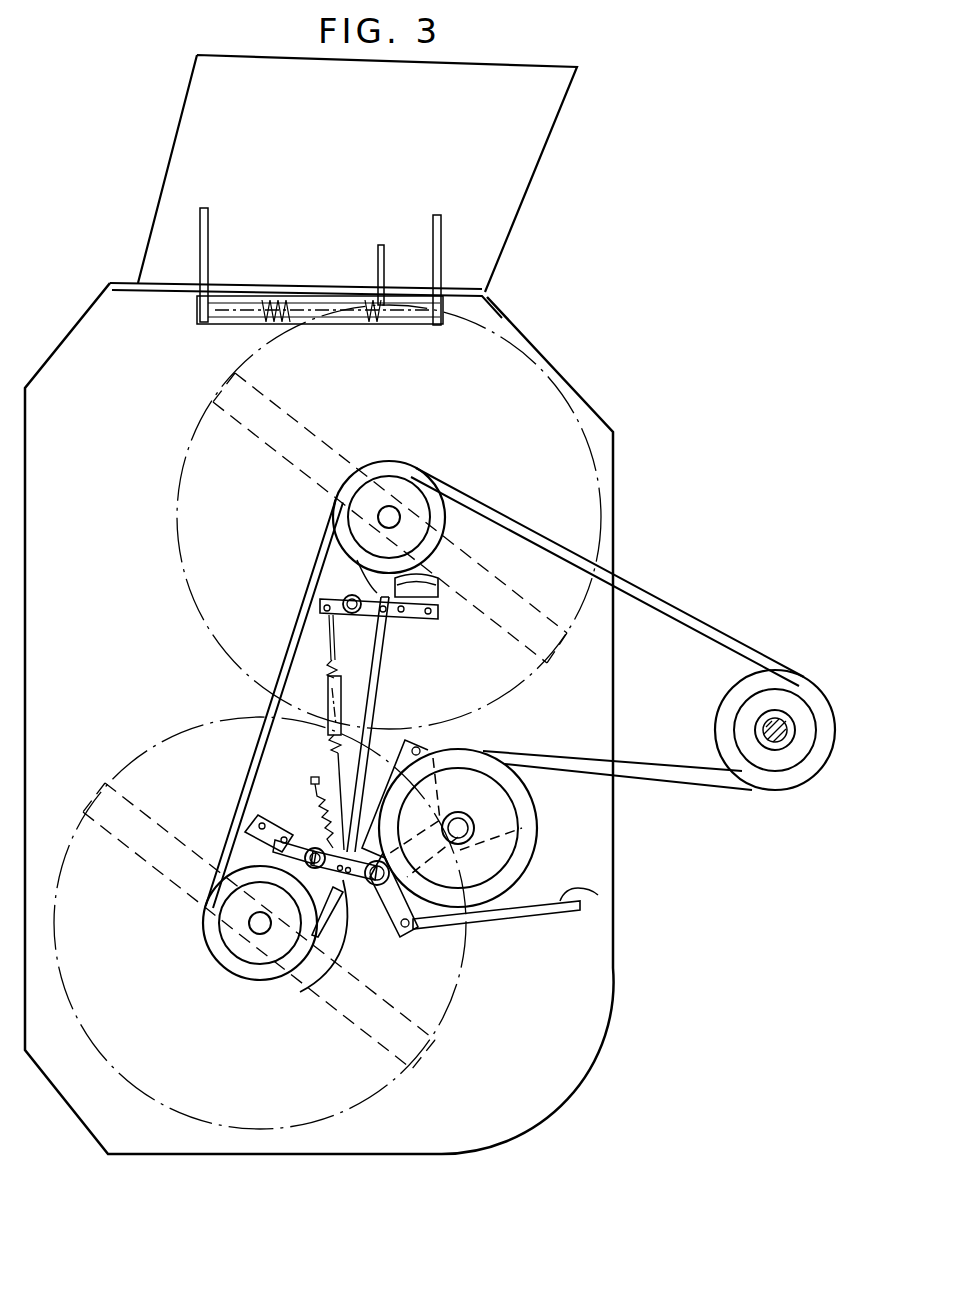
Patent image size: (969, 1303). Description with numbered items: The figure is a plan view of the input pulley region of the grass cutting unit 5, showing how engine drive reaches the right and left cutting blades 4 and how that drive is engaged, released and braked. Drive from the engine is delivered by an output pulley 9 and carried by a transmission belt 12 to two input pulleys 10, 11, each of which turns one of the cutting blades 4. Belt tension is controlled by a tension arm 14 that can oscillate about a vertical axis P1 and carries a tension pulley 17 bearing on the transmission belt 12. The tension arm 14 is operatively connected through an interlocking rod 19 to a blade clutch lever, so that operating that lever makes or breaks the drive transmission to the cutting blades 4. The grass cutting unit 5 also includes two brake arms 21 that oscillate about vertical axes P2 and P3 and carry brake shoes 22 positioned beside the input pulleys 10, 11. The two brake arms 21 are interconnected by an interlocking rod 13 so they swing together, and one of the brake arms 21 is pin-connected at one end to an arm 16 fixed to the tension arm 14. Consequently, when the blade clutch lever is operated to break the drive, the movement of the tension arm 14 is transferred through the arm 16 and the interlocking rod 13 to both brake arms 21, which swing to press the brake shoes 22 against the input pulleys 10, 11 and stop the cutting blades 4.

The cutting blades 4 is at (272, 448).
The grass cutting unit 5 is at (590, 388).
The output pulley 9 is at (718, 716).
The input pulley 10 is at (238, 975).
The input pulley 11 is at (405, 472).
The transmission belt 12 is at (298, 612).
The interlocking rod 13 is at (380, 698).
The tension arm 14 is at (520, 830).
The arm 16 is at (305, 985).
The tension pulley 17 is at (530, 775).
The interlocking rod 19 is at (598, 895).
The brake arms 21 is at (372, 598).
The brake shoes 22 is at (443, 586).
The vertical axis P1 is at (378, 887).
The vertical axis P2 is at (314, 848).
The vertical axis P3 is at (353, 614).